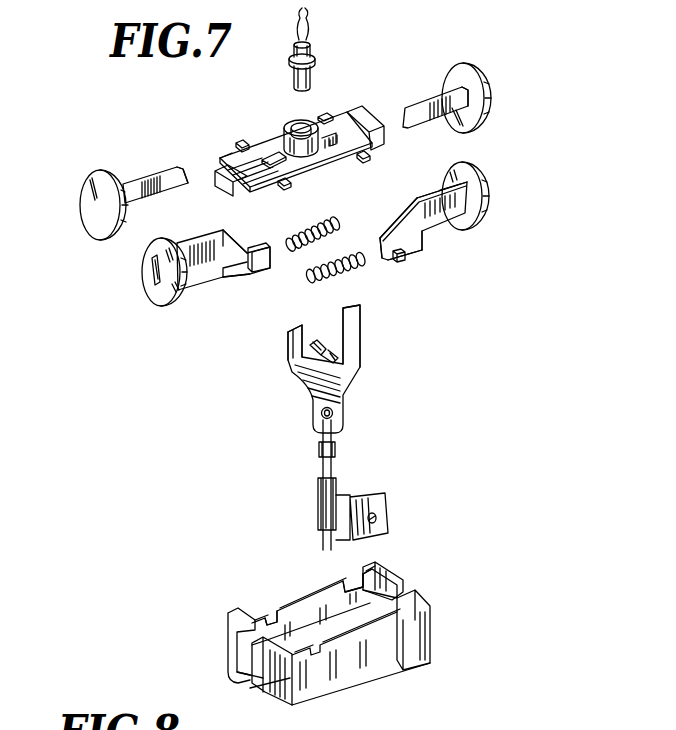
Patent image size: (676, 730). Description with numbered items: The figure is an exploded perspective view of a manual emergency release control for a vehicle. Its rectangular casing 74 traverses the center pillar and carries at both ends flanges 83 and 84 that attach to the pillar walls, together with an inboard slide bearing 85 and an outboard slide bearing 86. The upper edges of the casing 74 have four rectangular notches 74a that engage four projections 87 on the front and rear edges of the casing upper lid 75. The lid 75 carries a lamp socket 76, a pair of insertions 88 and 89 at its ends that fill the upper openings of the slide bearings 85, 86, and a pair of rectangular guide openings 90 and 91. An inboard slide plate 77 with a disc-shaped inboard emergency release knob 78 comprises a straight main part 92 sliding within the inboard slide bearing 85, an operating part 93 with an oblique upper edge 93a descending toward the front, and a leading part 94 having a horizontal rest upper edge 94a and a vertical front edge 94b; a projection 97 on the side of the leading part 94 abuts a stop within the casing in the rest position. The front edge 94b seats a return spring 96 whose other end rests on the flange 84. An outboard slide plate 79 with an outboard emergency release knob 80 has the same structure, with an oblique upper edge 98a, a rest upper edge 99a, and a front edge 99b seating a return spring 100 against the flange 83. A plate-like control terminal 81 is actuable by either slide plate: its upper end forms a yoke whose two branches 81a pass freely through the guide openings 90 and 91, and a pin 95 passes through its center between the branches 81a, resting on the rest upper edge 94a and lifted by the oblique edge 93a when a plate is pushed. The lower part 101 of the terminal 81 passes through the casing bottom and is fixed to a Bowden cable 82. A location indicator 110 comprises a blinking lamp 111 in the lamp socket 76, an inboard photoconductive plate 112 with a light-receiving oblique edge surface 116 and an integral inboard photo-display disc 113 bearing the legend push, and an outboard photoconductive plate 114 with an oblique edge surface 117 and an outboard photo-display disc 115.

The casing 74 is at (350, 658).
The rectangular notches 74a is at (272, 611).
The casing upper lid 75 is at (232, 153).
The lamp socket 76 is at (290, 122).
The inboard slide plate 77 is at (433, 258).
The inboard emergency release knob 78 is at (488, 184).
The outboard slide plate 79 is at (221, 294).
The outboard emergency release knob 80 is at (162, 298).
The control terminal 81 is at (297, 413).
The branches 81a is at (290, 345).
The Bowden cable 82 is at (334, 467).
The flange 83 is at (383, 583).
The flange 84 is at (228, 625).
The inboard slide bearing 85 is at (403, 592).
The outboard slide bearing 86 is at (240, 653).
The projections 87 is at (242, 142).
The insertion 88 is at (386, 136).
The insertion 89 is at (215, 180).
The rectangular guide opening 90 is at (323, 130).
The rectangular guide opening 91 is at (272, 150).
The straight main part 92 is at (443, 220).
The operating part 93 is at (413, 238).
The oblique upper edge 93a is at (408, 198).
The leading part 94 is at (389, 261).
The rest upper edge 94a is at (382, 237).
The front edge 94b is at (380, 248).
The pin 95 is at (340, 360).
The return spring 96 is at (350, 273).
The projection 97 is at (403, 260).
The oblique upper edge 98a is at (240, 238).
The rest upper edge 99a is at (250, 275).
The front edge 99b is at (270, 252).
The return spring 100 is at (310, 229).
The lower part 101 is at (333, 396).
The location indicator 110 is at (341, 58).
The lamp 111 is at (308, 81).
The inboard photoconductive plate 112 is at (436, 92).
The inboard photo-display disc 113 is at (494, 98).
The outboard photoconductive plate 114 is at (142, 177).
The outboard photo-display disc 115 is at (85, 223).
The light-receiving oblique edge surface 116 is at (407, 110).
The light-receiving oblique edge surface 117 is at (183, 173).